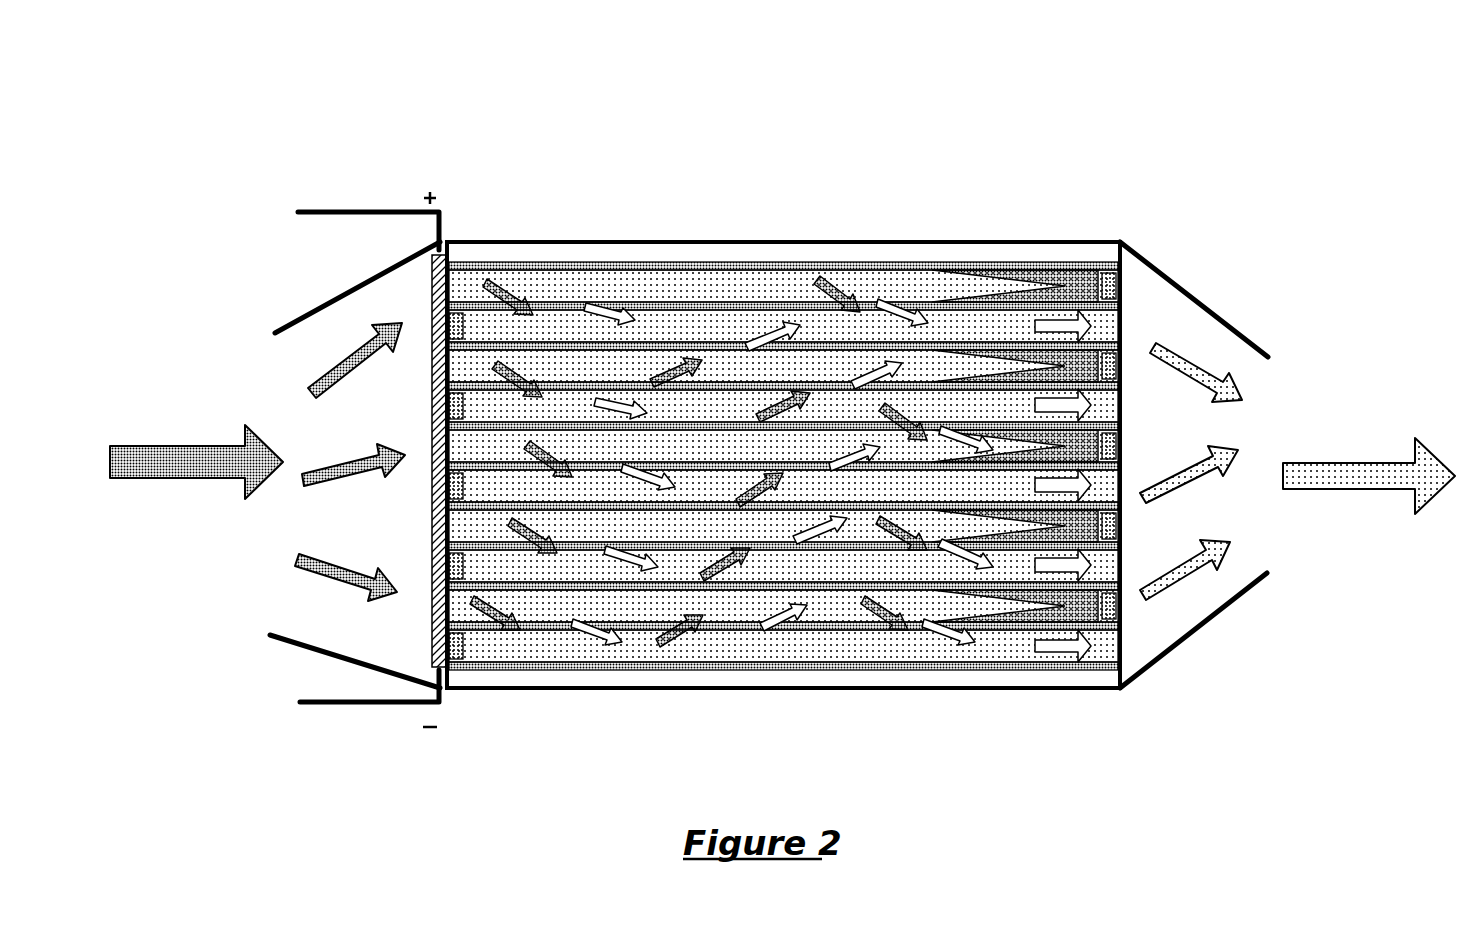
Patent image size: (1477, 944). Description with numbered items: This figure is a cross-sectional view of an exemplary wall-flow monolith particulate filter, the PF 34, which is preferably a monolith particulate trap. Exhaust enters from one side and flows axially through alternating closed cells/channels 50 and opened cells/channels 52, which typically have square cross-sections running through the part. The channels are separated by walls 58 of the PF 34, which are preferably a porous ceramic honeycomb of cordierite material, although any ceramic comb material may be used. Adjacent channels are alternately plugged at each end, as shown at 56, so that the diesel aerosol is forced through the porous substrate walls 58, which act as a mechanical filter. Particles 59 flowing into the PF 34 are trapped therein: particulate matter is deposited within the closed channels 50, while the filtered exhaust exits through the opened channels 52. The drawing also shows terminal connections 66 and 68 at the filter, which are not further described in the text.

The particulate filter 34 is at (757, 128).
The closed cells/channels 50 is at (955, 365).
The opened cells/channels 52 is at (870, 643).
The plugs 56 is at (447, 557).
The walls 58 is at (743, 300).
The particles 59 is at (1082, 283).
The positive terminal 66 is at (350, 210).
The negative terminal 68 is at (392, 705).